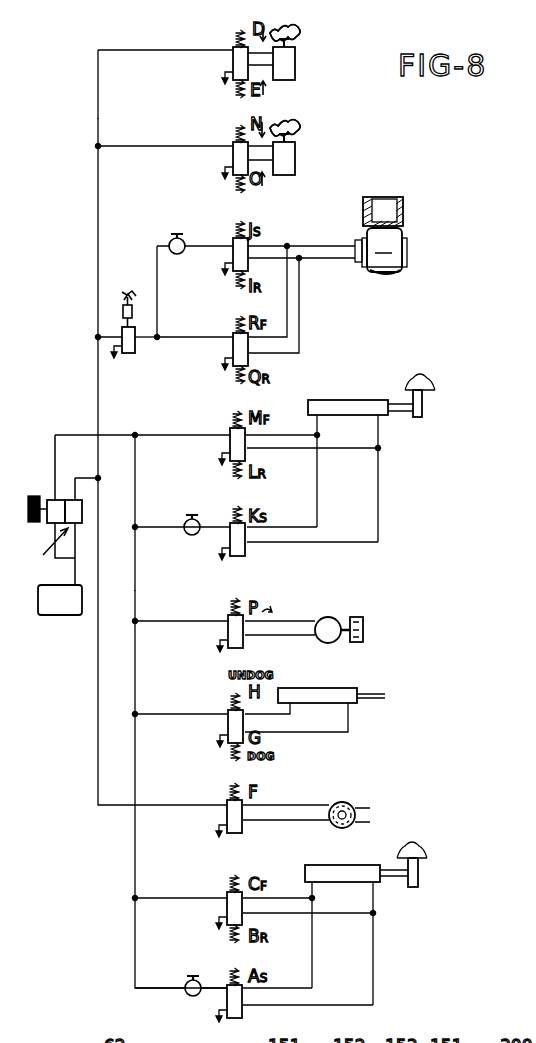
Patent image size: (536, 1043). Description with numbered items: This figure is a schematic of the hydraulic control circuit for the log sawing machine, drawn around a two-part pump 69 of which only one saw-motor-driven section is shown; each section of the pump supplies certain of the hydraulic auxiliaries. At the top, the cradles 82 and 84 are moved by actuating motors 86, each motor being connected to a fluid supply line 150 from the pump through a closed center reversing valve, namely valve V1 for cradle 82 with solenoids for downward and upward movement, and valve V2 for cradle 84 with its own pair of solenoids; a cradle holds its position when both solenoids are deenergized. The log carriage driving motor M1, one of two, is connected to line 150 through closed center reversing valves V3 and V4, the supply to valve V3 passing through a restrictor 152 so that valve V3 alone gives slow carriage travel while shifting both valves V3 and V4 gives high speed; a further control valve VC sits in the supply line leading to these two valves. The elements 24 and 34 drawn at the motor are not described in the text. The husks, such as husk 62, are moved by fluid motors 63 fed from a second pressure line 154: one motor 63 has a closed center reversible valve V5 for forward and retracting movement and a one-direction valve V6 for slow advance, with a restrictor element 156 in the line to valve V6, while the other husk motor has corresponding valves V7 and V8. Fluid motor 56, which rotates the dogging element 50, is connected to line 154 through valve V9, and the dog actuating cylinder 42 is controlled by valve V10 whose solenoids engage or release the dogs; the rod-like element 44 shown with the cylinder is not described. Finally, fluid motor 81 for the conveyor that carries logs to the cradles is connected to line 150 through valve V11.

The cradle 82 is at (298, 25).
The cradle 84 is at (298, 122).
The actuating motor 86 is at (295, 63).
The fluid supply line 150 is at (98, 119).
The restrictor 152 is at (178, 234).
The spindle head 24 is at (403, 204).
The motor coupling 34 is at (387, 273).
The log carriage driving motor M1 is at (360, 268).
The control valve VC is at (122, 335).
The husk 62 is at (428, 348).
The fluid motor 63 is at (339, 400).
The restrictor element 156 is at (180, 519).
The pump 69 is at (55, 525).
The pressure line 154 is at (136, 592).
The fluid motor 56 is at (330, 600).
The dogging element 50 is at (360, 612).
The dog actuating cylinder 42 is at (296, 688).
The dog rod 44 is at (359, 694).
The fluid motor 81 is at (343, 783).
The closed center reversing valve V1 is at (233, 51).
The closed center reversing valve V2 is at (232, 146).
The closed center reversing valve V3 is at (233, 248).
The closed center reversing valve V4 is at (233, 345).
The closed center reversible valve V5 is at (230, 439).
The closed center valve V6 is at (245, 552).
The control valve V7 is at (221, 903).
The control valve V8 is at (242, 1010).
The control valve V9 is at (243, 645).
The control valve V10 is at (228, 718).
The control valve V11 is at (234, 833).